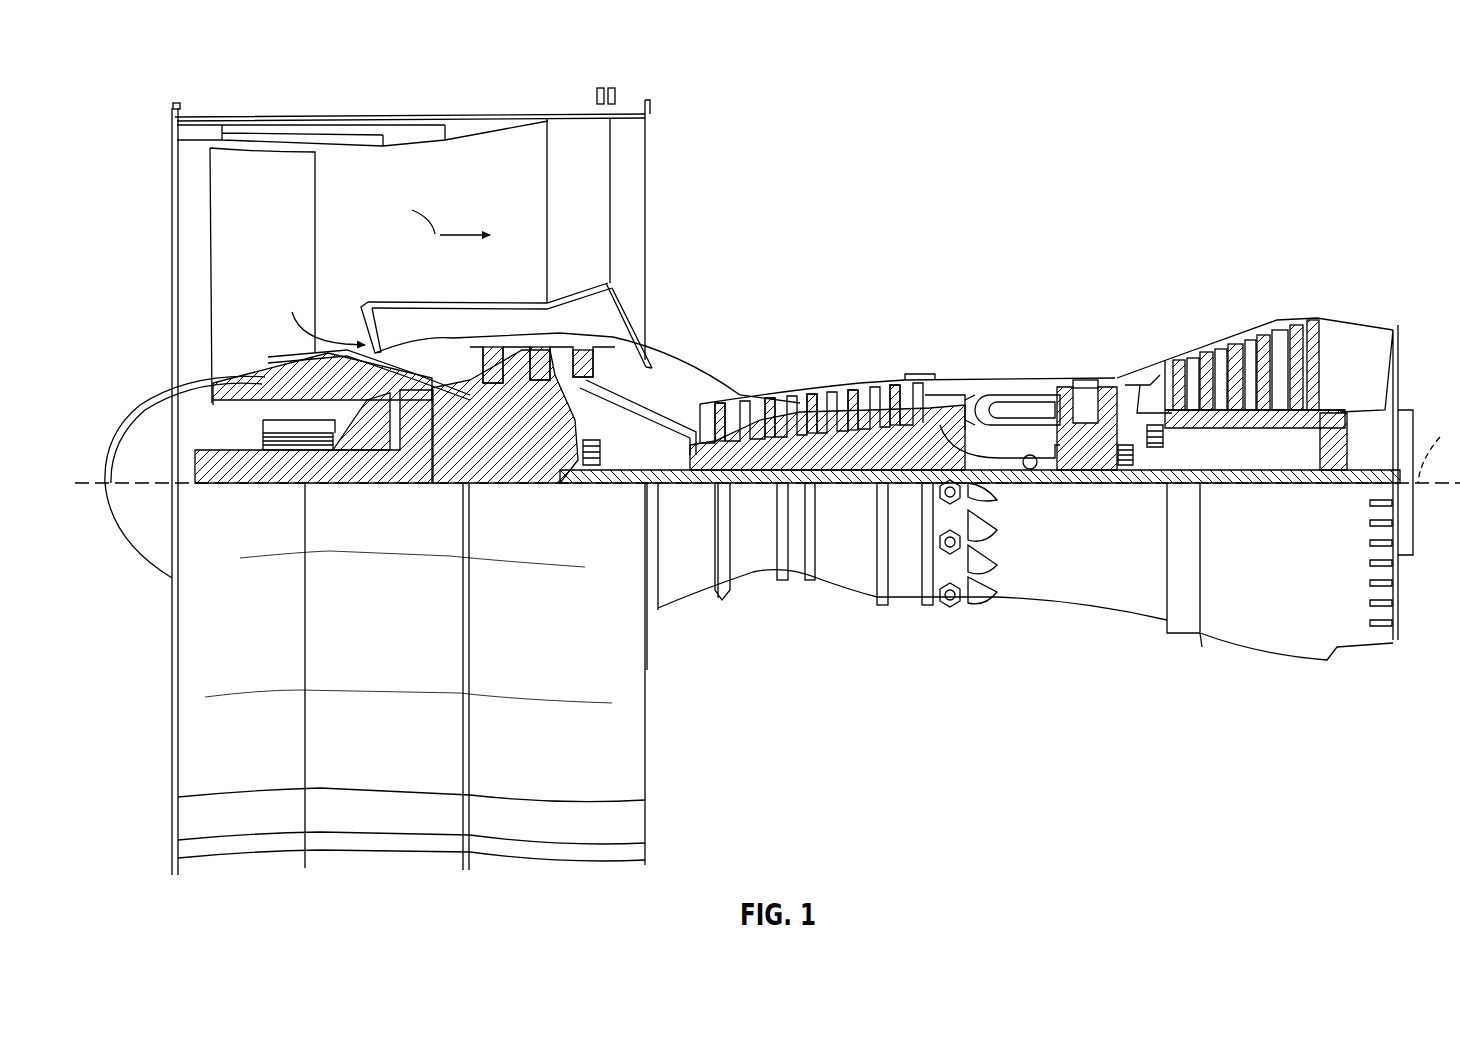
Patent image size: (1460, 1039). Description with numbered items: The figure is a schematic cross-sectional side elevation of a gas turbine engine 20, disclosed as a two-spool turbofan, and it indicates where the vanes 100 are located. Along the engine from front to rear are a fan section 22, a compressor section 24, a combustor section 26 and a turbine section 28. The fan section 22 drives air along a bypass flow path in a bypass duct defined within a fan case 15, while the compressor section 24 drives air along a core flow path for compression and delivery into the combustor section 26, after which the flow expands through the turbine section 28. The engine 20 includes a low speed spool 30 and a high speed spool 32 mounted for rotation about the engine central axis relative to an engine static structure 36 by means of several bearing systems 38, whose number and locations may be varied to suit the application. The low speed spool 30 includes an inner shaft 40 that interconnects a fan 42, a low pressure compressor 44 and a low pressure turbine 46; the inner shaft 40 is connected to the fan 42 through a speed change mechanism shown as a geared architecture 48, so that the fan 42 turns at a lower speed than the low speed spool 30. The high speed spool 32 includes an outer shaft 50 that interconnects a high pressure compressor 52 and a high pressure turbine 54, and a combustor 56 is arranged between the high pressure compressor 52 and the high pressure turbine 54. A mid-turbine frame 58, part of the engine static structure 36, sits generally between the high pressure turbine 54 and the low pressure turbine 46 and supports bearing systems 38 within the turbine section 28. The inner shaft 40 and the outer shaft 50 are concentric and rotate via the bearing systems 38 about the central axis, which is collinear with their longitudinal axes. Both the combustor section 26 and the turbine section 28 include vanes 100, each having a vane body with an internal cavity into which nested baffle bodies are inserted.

The fan case 15 is at (533, 116).
The gas turbine engine 20 is at (1206, 90).
The fan section 22 is at (300, 100).
The compressor section 24 is at (760, 312).
The combustor section 26 is at (1045, 280).
The turbine section 28 is at (1186, 272).
The low speed spool 30 is at (868, 490).
The high speed spool 32 is at (918, 440).
The engine static structure 36 is at (908, 600).
The bearing systems 38 is at (276, 442).
The inner shaft 40 is at (663, 488).
The fan 42 is at (292, 247).
The low pressure compressor 44 is at (562, 357).
The low pressure turbine 46 is at (1260, 340).
The geared architecture 48 is at (413, 452).
The outer shaft 50 is at (1036, 468).
The high pressure compressor 52 is at (822, 448).
The high pressure turbine 54 is at (1090, 400).
The combustor 56 is at (1012, 405).
The mid-turbine frame 58 is at (1143, 365).
The vanes 100 is at (607, 370).